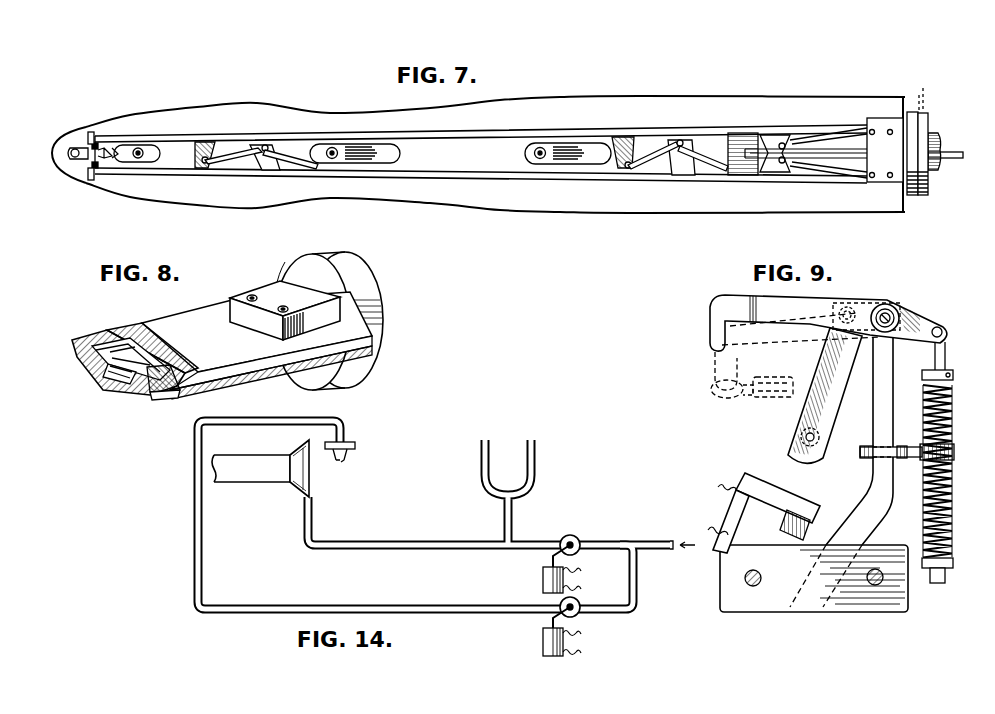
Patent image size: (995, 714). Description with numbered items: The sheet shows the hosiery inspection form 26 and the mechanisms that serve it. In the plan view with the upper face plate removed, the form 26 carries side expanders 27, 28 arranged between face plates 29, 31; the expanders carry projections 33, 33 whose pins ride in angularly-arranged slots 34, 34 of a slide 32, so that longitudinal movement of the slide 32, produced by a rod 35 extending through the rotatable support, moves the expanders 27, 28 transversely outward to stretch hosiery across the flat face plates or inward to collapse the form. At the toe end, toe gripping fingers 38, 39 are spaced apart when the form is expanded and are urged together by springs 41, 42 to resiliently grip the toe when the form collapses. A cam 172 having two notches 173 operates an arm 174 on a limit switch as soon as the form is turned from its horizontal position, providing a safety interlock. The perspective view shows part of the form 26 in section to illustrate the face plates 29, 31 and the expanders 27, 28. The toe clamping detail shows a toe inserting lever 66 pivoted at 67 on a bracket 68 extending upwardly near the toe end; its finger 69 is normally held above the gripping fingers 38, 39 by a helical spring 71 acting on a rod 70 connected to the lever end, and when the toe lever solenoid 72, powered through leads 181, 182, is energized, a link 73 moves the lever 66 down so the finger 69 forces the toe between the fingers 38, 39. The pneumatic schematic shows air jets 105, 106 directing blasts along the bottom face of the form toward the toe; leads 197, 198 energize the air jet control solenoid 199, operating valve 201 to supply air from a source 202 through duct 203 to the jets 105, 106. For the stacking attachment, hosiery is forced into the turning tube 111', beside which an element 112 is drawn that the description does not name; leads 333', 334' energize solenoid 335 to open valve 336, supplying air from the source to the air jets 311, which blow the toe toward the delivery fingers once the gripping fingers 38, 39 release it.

In FIG. 7, the hosiery inspection form 26 is at (573, 92).
In FIG. 7, the side expander 27 is at (641, 102).
In FIG. 8, the side expander 27 is at (100, 340).
In FIG. 7, the side expander 28 is at (690, 175).
In FIG. 8, the side expander 28 is at (190, 376).
In FIG. 8, the face plate 29 is at (173, 323).
In FIG. 7, the face plate 31 is at (806, 180).
In FIG. 8, the face plate 31 is at (131, 392).
In FIG. 7, the slide 32 is at (481, 154).
In FIG. 7, the projection 33 is at (205, 150).
In FIG. 7, the angularly-arranged slot 34 is at (263, 146).
In FIG. 8, the angularly-arranged slot 34 is at (122, 382).
In FIG. 7, the rod 35 is at (836, 178).
In FIG. 7, the toe gripping finger 38 is at (82, 133).
In FIG. 7, the toe gripping finger 39 is at (78, 178).
In FIG. 7, the spring 41 is at (93, 142).
In FIG. 7, the spring 42 is at (96, 168).
In FIG. 7, the cam 172 is at (928, 185).
In FIG. 8, the cam 172 is at (384, 306).
In FIG. 7, the notch 173 is at (928, 115).
In FIG. 8, the notch 173 is at (384, 331).
In FIG. 7, the arm 174 is at (923, 88).
In FIG. 9, the toe inserting lever 66 is at (812, 306).
In FIG. 9, the pivot 67 is at (887, 311).
In FIG. 9, the bracket 68 is at (872, 431).
In FIG. 9, the finger 69 is at (708, 350).
In FIG. 9, the rod 70 is at (922, 510).
In FIG. 9, the helical spring 71 is at (952, 463).
In FIG. 9, the toe lever solenoid 72 is at (754, 534).
In FIG. 9, the link 73 is at (830, 405).
In FIG. 9, the lead 181 is at (727, 484).
In FIG. 9, the lead 182 is at (712, 527).
In FIG. 14, the air jet 105 is at (536, 462).
In FIG. 14, the air jet 106 is at (481, 466).
In FIG. 14, the turning tube 111' is at (251, 478).
In FIG. 14, the nozzle cone 112 is at (312, 484).
In FIG. 14, the lead 197 is at (583, 571).
In FIG. 14, the lead 198 is at (583, 589).
In FIG. 14, the air jet control solenoid 199 is at (542, 580).
In FIG. 14, the valve 201 is at (576, 538).
In FIG. 14, the source 202 is at (673, 555).
In FIG. 14, the duct 203 is at (408, 546).
In FIG. 14, the air jet 311 is at (342, 450).
In FIG. 14, the lead 333' is at (596, 632).
In FIG. 14, the lead 334' is at (597, 652).
In FIG. 14, the solenoid 335 is at (542, 639).
In FIG. 14, the valve 336 is at (585, 618).